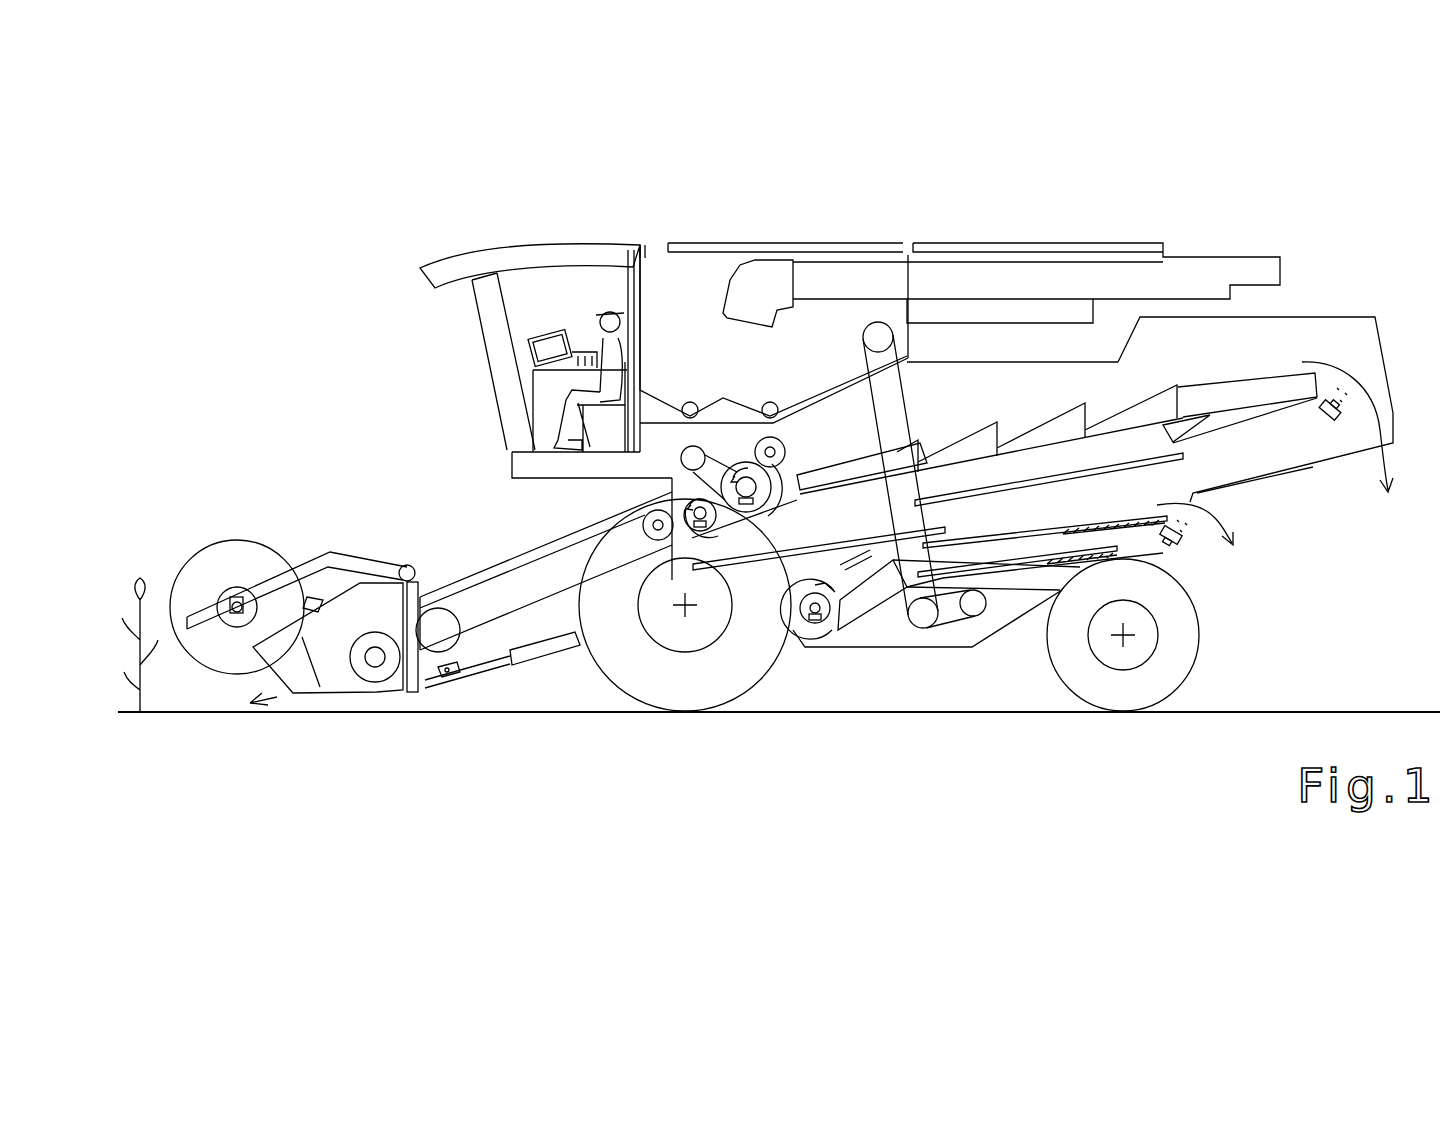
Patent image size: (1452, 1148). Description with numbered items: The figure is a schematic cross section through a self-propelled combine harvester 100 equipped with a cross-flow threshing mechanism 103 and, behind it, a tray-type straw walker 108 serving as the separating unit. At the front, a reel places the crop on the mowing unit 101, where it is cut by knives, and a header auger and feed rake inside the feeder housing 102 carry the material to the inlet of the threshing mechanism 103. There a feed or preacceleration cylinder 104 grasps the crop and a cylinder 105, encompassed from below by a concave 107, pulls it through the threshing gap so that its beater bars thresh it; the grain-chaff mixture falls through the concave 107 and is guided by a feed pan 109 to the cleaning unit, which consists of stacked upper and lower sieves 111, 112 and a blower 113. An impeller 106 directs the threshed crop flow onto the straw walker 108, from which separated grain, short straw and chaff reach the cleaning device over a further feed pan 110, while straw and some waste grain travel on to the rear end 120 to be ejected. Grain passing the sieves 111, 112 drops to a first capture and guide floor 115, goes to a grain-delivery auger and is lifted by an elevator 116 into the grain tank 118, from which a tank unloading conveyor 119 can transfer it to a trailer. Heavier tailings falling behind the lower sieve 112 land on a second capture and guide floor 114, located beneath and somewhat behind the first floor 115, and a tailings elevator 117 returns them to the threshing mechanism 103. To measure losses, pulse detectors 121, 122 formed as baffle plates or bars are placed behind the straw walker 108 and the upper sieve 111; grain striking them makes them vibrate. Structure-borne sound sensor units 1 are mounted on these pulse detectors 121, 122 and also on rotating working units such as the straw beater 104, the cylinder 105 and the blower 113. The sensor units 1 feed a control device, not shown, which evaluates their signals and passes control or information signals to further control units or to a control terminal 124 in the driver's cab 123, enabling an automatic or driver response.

The combine harvester 100 is at (291, 328).
The mowing unit 101 is at (296, 529).
The feeder housing 102 is at (495, 560).
The threshing mechanism 103 is at (686, 489).
The preacceleration cylinder 104 is at (688, 516).
The cylinder 105 is at (745, 463).
The impeller 106 is at (786, 448).
The concave 107 is at (725, 515).
The straw walker 108 is at (1165, 395).
The feed pan 109 is at (793, 617).
The further feed pan 110 is at (1028, 487).
The upper sieve 111 is at (1105, 523).
The lower sieve 112 is at (978, 567).
The blower 113 is at (853, 625).
The second capture and guide floor 114 is at (1020, 597).
The first capture and guide floor 115 is at (953, 615).
The elevator 116 is at (900, 390).
The tailings elevator 117 is at (810, 484).
The grain tank 118 is at (683, 283).
The tank unloading conveyor 119 is at (1000, 275).
The rear end 120 is at (1375, 345).
The pulse detector 121 is at (1337, 418).
The pulse detector 122 is at (1180, 540).
The driver's cab 123 is at (565, 258).
The control terminal 124 is at (528, 350).
The structure-borne sound sensor unit 1 is at (672, 577).